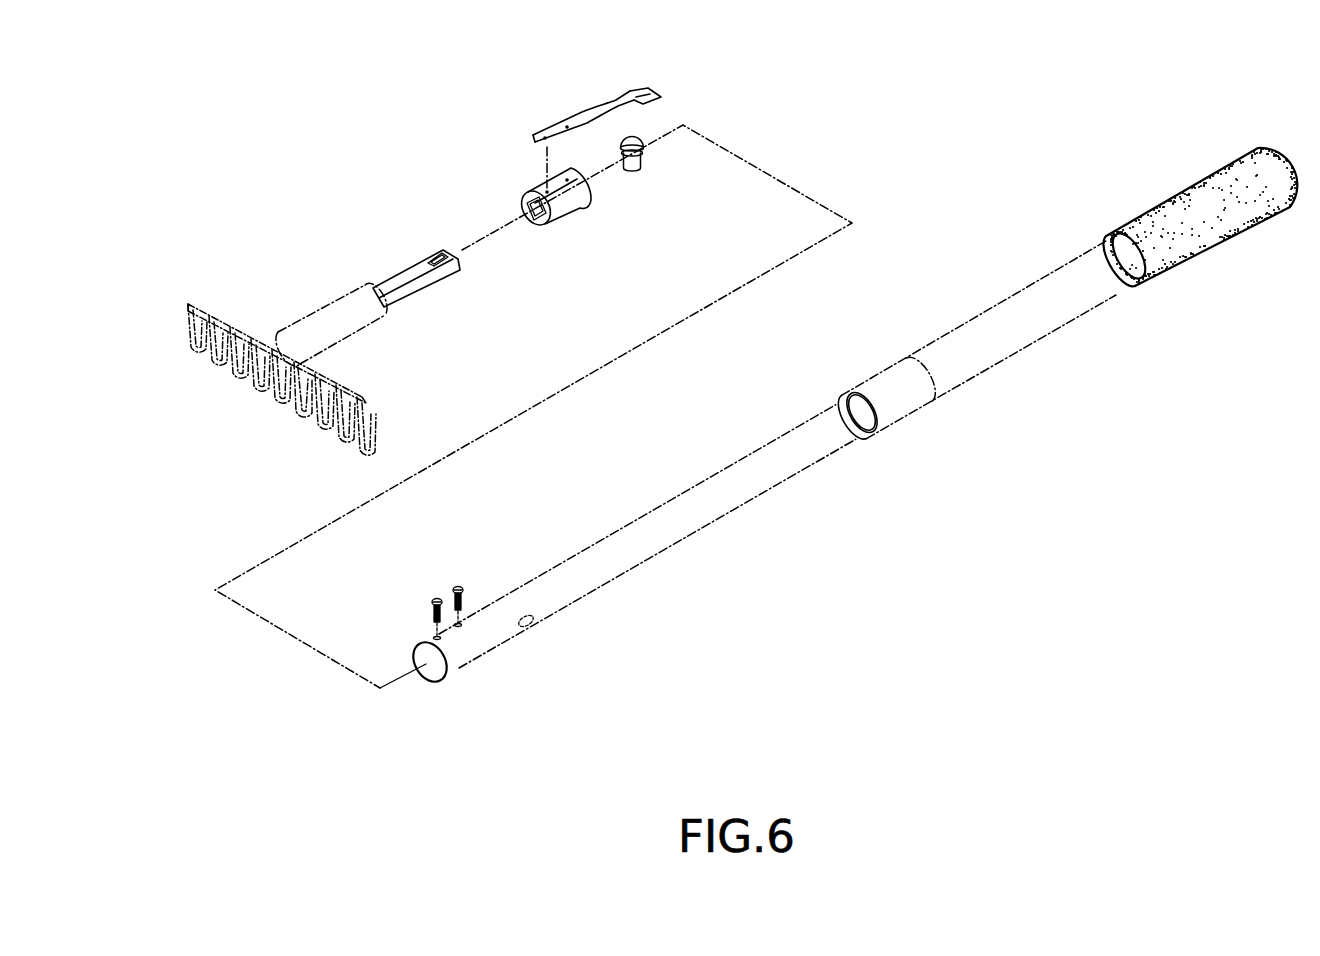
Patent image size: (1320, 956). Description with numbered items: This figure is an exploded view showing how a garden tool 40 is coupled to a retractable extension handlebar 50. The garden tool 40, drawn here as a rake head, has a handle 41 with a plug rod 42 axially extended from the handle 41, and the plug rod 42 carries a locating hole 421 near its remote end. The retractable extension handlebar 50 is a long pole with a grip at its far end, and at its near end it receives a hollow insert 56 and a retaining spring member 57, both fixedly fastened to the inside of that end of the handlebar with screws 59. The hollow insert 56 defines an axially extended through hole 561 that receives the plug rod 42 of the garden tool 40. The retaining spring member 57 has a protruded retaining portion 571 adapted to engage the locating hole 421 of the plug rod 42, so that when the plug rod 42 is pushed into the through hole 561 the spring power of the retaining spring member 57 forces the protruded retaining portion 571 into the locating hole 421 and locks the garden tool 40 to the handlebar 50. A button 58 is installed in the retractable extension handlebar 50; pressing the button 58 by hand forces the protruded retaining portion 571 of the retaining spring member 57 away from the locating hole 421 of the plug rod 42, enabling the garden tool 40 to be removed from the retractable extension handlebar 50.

The garden tool 40 is at (237, 320).
The handle 41 is at (325, 310).
The plug rod 42 is at (397, 280).
The locating hole 421 is at (437, 258).
The retractable extension handlebar 50 is at (1114, 200).
The hollow insert 56 is at (577, 203).
The axially extended through hole 561 is at (543, 227).
The retaining spring member 57 is at (582, 112).
The protruded retaining portion 571 is at (640, 112).
The button 58 is at (635, 168).
The screws 59 is at (462, 592).